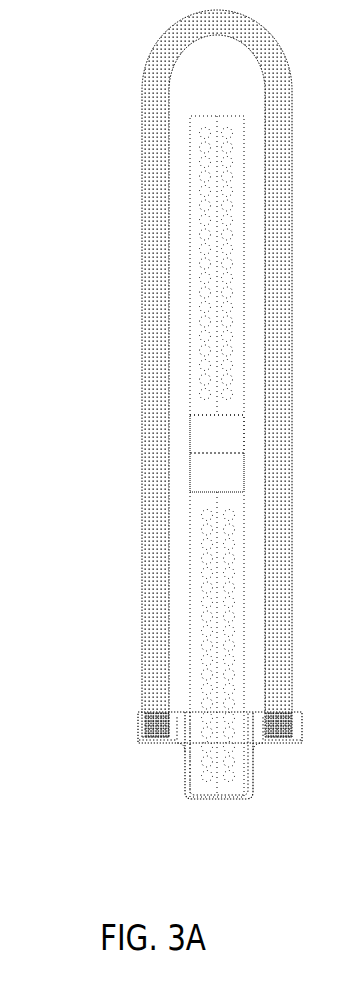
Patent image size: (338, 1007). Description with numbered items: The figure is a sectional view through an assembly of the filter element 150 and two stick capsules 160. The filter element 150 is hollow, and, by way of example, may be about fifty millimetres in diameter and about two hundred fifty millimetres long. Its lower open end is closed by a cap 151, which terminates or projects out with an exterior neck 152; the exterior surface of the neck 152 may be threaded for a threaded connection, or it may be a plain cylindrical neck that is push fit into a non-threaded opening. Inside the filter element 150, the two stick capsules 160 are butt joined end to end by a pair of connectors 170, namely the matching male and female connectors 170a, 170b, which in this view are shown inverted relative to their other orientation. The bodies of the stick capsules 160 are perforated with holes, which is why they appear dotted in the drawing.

The filter element 150 is at (157, 376).
The cap 151 is at (167, 746).
The exterior neck 152 is at (253, 777).
The stick capsule 160 is at (202, 181).
The connectors 170 is at (61, 411).
The male connector 170a is at (212, 438).
The female connector 170b is at (208, 472).